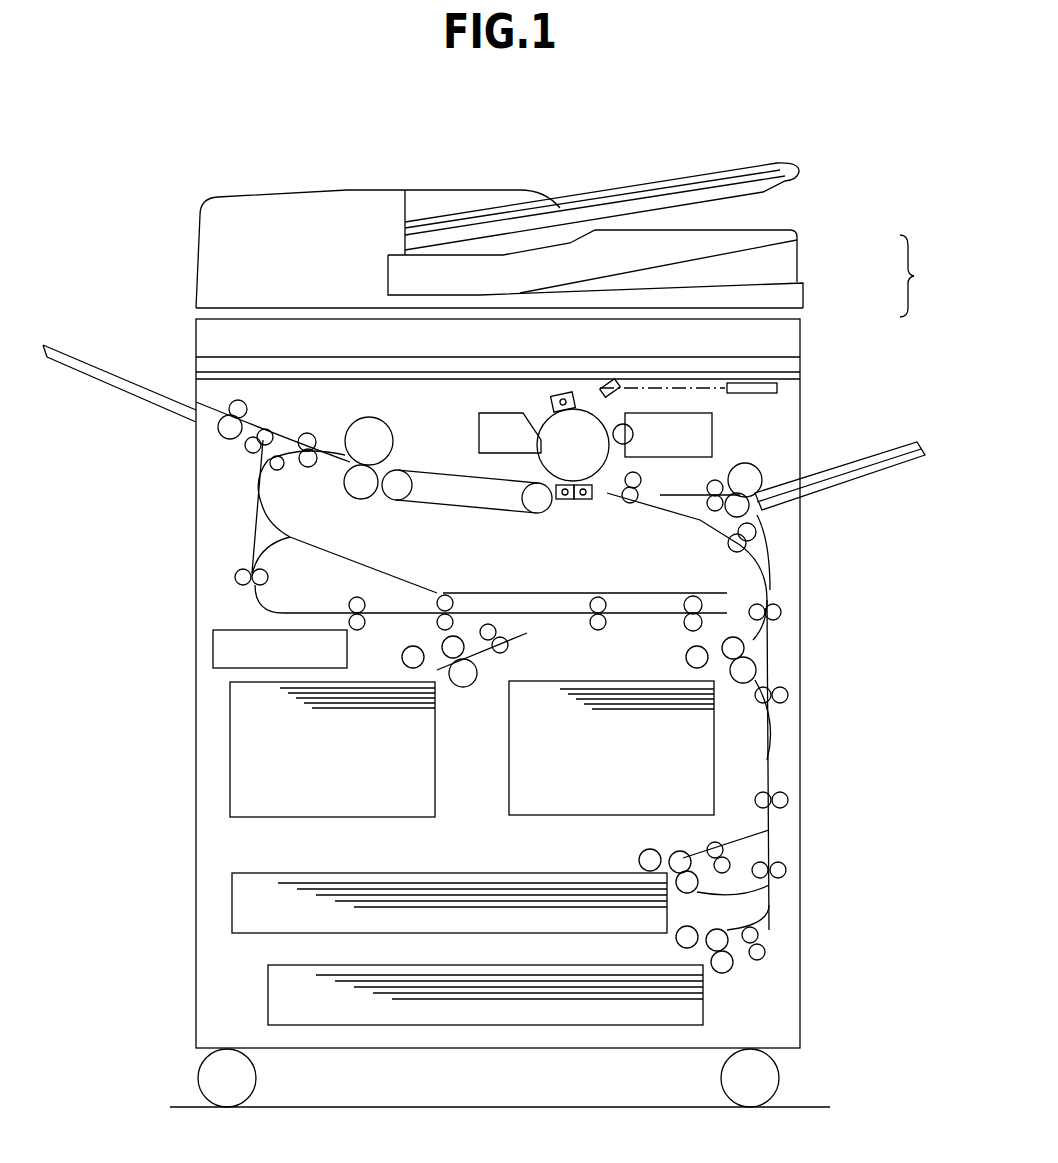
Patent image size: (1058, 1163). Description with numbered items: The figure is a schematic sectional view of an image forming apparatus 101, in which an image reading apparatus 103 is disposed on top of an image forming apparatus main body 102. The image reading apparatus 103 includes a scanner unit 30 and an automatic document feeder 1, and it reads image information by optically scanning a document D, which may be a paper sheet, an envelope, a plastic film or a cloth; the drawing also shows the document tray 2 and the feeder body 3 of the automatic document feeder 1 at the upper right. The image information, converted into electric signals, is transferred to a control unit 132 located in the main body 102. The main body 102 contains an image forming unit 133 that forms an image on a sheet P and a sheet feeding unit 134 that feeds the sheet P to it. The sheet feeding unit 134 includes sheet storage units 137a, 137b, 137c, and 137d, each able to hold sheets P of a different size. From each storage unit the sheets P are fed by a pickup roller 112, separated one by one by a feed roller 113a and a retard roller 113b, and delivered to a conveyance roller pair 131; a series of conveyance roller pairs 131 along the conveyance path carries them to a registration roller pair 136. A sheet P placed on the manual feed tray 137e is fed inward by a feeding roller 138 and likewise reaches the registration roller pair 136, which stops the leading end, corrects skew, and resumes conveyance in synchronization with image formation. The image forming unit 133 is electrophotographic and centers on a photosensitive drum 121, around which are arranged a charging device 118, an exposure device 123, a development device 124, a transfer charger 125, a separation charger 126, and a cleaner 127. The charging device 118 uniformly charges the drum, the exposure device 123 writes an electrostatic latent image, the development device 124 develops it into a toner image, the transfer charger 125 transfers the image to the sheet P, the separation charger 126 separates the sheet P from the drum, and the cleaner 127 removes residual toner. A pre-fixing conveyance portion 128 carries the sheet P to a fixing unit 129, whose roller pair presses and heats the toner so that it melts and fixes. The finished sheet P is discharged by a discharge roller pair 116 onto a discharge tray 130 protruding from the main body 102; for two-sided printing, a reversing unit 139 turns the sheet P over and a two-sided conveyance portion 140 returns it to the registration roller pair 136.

The image forming apparatus 101 is at (560, 150).
The document D is at (660, 178).
The document tray 2 is at (785, 165).
The automatic document feeder 3 is at (790, 228).
The automatic document feeder 1 is at (815, 255).
The image reading apparatus 103 is at (931, 276).
The scanner unit 30 is at (815, 327).
The image forming apparatus main body 102 is at (815, 382).
The charging device 118 is at (566, 390).
The fixing unit 129 is at (348, 425).
The cleaner 127 is at (478, 420).
The photosensitive drum 121 is at (540, 420).
The image forming unit 133 is at (500, 465).
The reversing unit 139 is at (365, 545).
The pre-fixing conveyance portion 128 is at (468, 490).
The separation charger 126 is at (563, 500).
The transfer charger 125 is at (585, 500).
The registration roller pair 136 is at (640, 505).
The exposure device 123 is at (770, 393).
The development device 124 is at (715, 440).
The feeding roller 138 is at (762, 475).
The manual feed tray 137e is at (880, 470).
The sheet feeding unit 134 is at (805, 580).
The conveyance roller pair 131 is at (508, 643).
The discharge roller pair 116 is at (240, 440).
The discharge tray 130 is at (128, 405).
The two-sided conveyance portion 140 is at (220, 597).
The control unit 132 is at (213, 650).
The sheet storage unit 137c is at (230, 735).
The pickup roller 112 is at (408, 645).
The feed roller 113a is at (458, 636).
The retard roller 113b is at (466, 688).
The sheet P is at (580, 681).
The sheet storage unit 137d is at (714, 760).
The sheet storage unit 137b is at (232, 900).
The sheet storage unit 137a is at (268, 990).